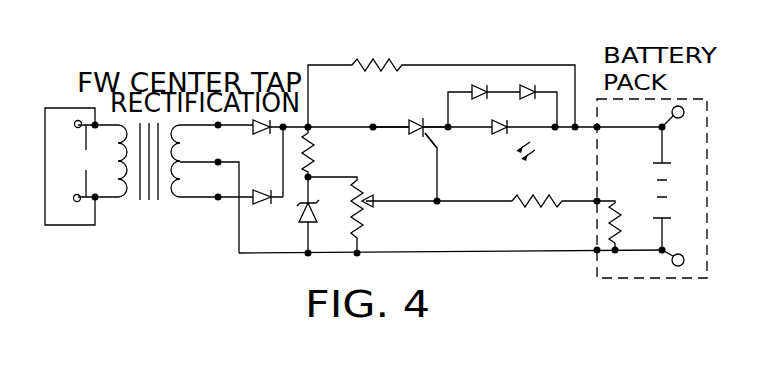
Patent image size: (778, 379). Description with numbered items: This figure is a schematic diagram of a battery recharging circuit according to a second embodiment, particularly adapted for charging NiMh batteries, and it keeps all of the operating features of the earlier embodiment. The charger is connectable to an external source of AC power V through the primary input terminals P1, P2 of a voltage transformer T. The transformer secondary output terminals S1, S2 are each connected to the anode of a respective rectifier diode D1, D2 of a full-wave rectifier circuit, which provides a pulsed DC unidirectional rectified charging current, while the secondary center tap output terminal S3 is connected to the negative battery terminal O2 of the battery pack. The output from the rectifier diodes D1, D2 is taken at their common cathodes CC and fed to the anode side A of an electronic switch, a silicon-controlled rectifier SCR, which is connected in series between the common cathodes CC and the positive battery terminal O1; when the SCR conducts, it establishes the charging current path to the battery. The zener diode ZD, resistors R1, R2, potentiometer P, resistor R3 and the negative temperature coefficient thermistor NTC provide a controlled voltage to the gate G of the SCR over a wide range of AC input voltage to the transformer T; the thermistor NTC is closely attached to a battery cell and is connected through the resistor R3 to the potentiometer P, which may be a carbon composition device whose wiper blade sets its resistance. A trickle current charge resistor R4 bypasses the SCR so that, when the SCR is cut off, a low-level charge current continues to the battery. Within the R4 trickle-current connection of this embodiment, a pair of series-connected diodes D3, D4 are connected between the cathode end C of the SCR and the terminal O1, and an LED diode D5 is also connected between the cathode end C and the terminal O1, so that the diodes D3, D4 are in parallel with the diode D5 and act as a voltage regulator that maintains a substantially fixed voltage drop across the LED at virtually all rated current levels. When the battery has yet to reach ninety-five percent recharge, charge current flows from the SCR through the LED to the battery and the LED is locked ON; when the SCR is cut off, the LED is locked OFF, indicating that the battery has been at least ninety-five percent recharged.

The primary input terminal P1 is at (77, 121).
The primary input terminal P2 is at (76, 201).
The AC power source V is at (70, 166).
The voltage transformer T is at (156, 176).
The transformer secondary output terminal S1 is at (218, 130).
The transformer secondary output terminal S2 is at (220, 200).
The transformer secondary center tap output terminal S3 is at (239, 178).
The common cathodes CC is at (292, 135).
The rectifier diode D1 is at (276, 123).
The rectifier diode D2 is at (263, 203).
The zener diode ZD is at (294, 215).
The resistor R1 is at (322, 152).
The resistor R2 is at (353, 215).
The potentiometer P is at (355, 205).
The trickle current charge resistor R4 is at (441, 80).
The silicon-controlled rectifier SCR is at (414, 141).
The anode side of the SCR A is at (391, 118).
The cathode end of the SCR C is at (425, 118).
The gate of the SCR G is at (424, 137).
The diode D3 is at (482, 96).
The diode D4 is at (545, 96).
The LED diode D5 is at (485, 144).
The element LED is at (548, 146).
The resistor R3 is at (537, 219).
The negative temperature coefficient thermistor NTC is at (619, 215).
The positive battery terminal O1 is at (675, 178).
The negative battery terminal O2 is at (679, 264).